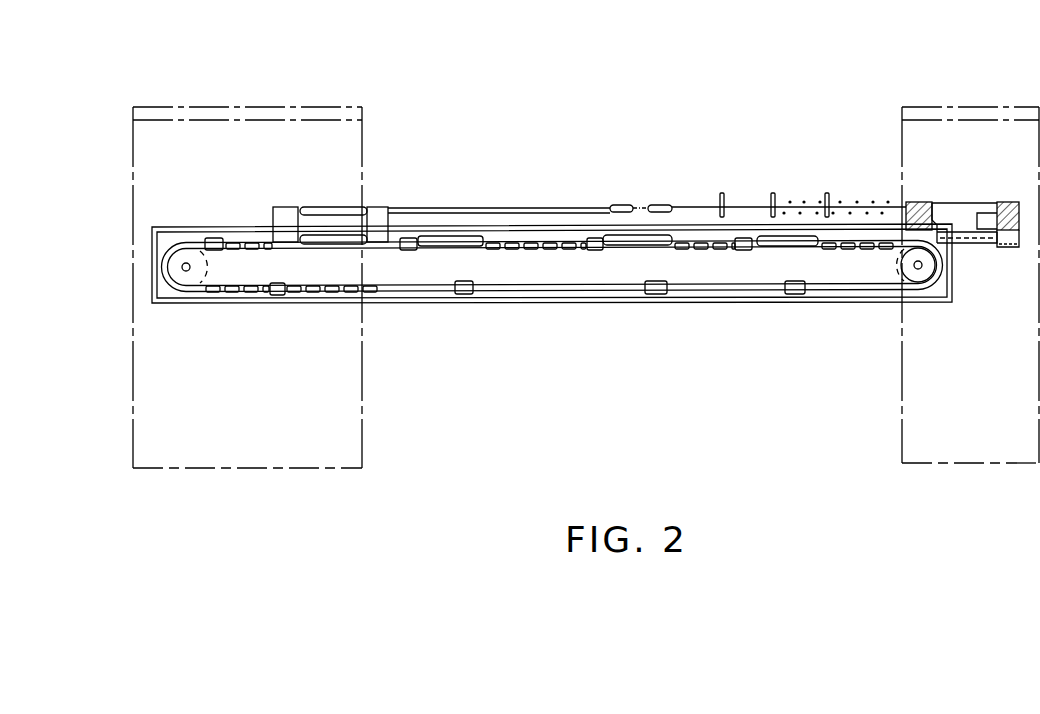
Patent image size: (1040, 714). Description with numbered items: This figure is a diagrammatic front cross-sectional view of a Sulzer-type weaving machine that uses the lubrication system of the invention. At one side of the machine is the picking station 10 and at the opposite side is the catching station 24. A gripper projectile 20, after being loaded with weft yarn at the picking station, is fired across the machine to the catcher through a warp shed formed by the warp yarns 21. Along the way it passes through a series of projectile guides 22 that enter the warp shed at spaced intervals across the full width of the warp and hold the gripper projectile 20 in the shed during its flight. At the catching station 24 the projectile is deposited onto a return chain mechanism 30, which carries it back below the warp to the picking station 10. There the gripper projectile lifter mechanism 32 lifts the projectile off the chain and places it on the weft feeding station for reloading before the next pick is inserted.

The picking station 10 is at (956, 100).
The catching station 24 is at (233, 104).
The gripper projectile 20 is at (650, 200).
The warp yarns 21 is at (857, 201).
The projectile guides 22 is at (827, 192).
The conveyor belt 30 is at (333, 292).
The gripper projectile lifter mechanism 32 is at (967, 246).